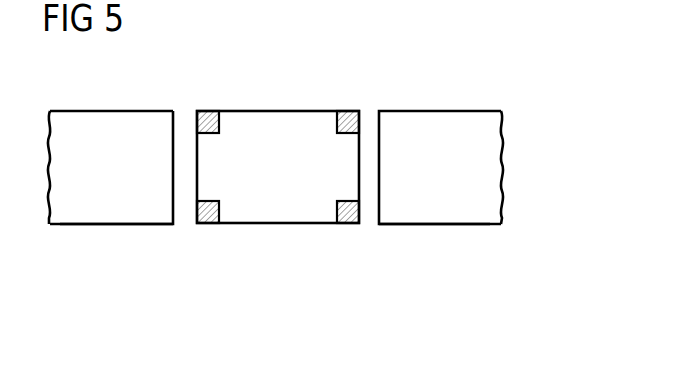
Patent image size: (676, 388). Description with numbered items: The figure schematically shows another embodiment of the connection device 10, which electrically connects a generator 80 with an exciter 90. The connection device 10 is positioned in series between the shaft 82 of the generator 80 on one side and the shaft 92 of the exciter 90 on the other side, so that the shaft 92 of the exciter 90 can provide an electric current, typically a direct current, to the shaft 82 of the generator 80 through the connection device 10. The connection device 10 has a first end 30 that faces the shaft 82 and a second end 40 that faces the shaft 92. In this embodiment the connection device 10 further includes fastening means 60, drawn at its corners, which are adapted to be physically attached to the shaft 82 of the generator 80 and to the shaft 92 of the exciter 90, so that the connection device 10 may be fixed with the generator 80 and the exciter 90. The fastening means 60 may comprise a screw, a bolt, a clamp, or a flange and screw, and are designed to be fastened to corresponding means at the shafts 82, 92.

The connection device 10 is at (282, 207).
The first end 30 is at (193, 167).
The second end 40 is at (363, 170).
The fastening means 60 is at (210, 127).
The generator 80 is at (72, 102).
The shaft of the generator 82 is at (88, 210).
The exciter 90 is at (435, 100).
The shaft of the exciter 92 is at (452, 212).